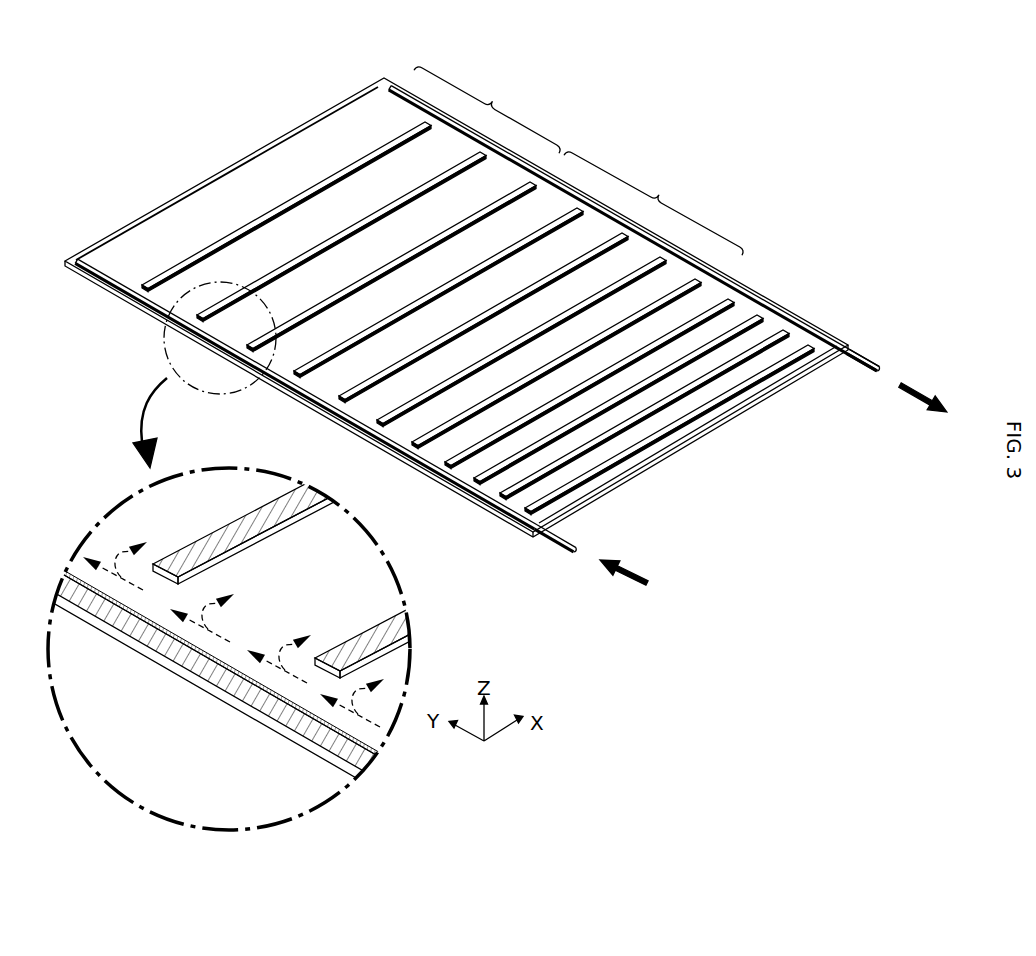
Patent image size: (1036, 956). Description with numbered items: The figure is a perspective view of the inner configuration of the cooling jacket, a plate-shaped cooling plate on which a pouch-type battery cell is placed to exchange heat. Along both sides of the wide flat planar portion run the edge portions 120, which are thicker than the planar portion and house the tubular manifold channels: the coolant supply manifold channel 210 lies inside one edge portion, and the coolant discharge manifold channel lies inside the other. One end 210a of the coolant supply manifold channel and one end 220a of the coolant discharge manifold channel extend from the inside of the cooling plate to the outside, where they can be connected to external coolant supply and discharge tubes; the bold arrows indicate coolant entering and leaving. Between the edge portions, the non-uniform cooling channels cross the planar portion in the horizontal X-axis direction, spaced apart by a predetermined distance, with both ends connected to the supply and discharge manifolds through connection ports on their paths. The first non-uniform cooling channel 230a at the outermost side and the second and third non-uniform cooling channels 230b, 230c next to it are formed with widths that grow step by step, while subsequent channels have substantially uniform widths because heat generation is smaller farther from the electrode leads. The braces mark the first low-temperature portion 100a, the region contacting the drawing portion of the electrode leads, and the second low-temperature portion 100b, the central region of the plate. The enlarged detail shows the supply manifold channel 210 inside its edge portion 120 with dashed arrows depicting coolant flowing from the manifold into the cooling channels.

The first low-temperature portion 100a is at (487, 110).
The second low-temperature portion 100b is at (653, 203).
The edge portion 120 is at (780, 312).
The coolant supply manifold channel 210 is at (240, 660).
The one end of the coolant supply manifold channel 210a is at (561, 543).
The one end of the coolant discharge manifold channel 220a is at (870, 370).
The first non-uniform cooling channel 230a is at (133, 261).
The second non-uniform cooling channel 230b is at (177, 288).
The third non-uniform cooling channel 230c is at (232, 328).